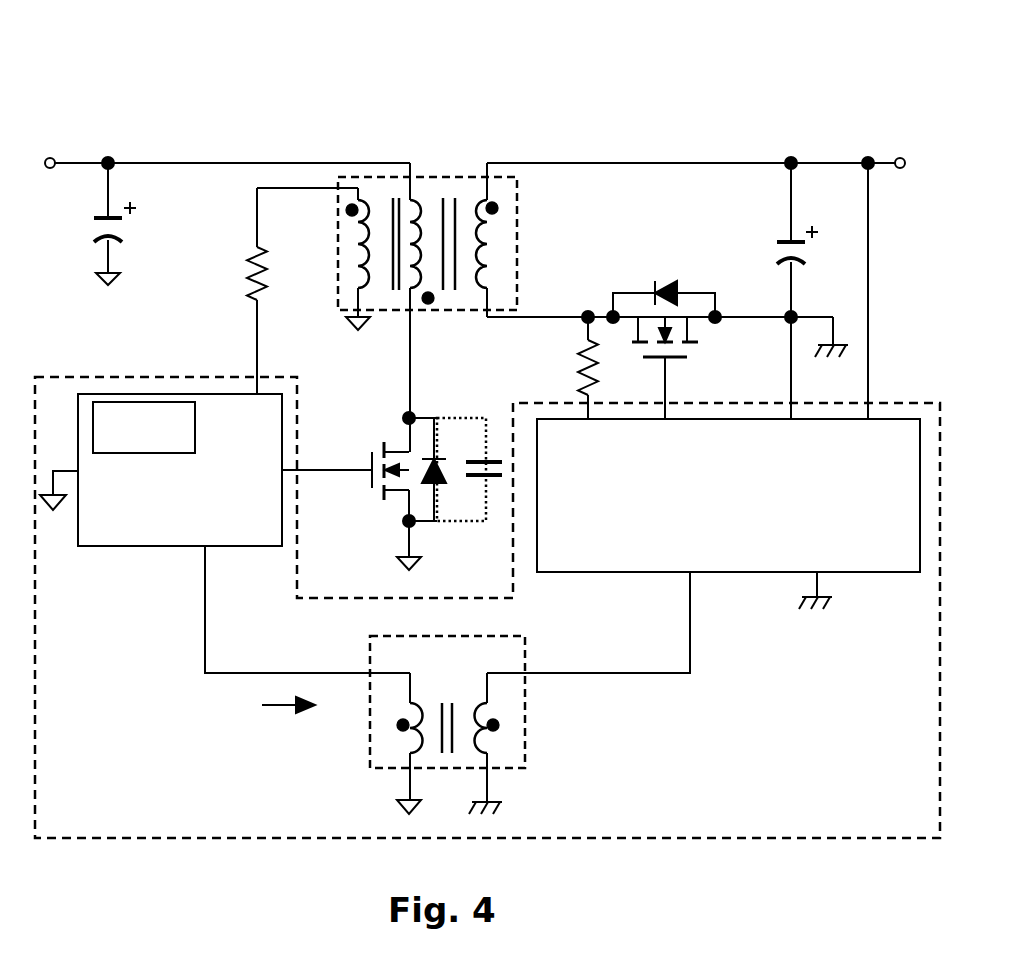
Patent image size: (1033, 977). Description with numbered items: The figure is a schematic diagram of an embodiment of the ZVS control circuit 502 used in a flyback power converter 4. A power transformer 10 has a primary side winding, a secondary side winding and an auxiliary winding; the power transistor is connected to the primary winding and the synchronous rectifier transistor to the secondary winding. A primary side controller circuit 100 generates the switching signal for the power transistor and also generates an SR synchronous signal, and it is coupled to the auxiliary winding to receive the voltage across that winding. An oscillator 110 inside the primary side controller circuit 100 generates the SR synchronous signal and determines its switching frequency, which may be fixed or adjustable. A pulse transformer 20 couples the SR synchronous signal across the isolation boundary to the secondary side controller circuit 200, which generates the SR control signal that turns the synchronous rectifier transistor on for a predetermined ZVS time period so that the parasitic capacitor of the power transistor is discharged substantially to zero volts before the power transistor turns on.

The flyback power converter 4 is at (168, 55).
The power transformer 10 is at (524, 190).
The pulse transformer 20 is at (457, 666).
The primary side controller circuit 100 is at (205, 509).
The oscillator 110 is at (114, 408).
The secondary side controller circuit 200 is at (733, 506).
The ZVS control circuit 502 is at (904, 813).